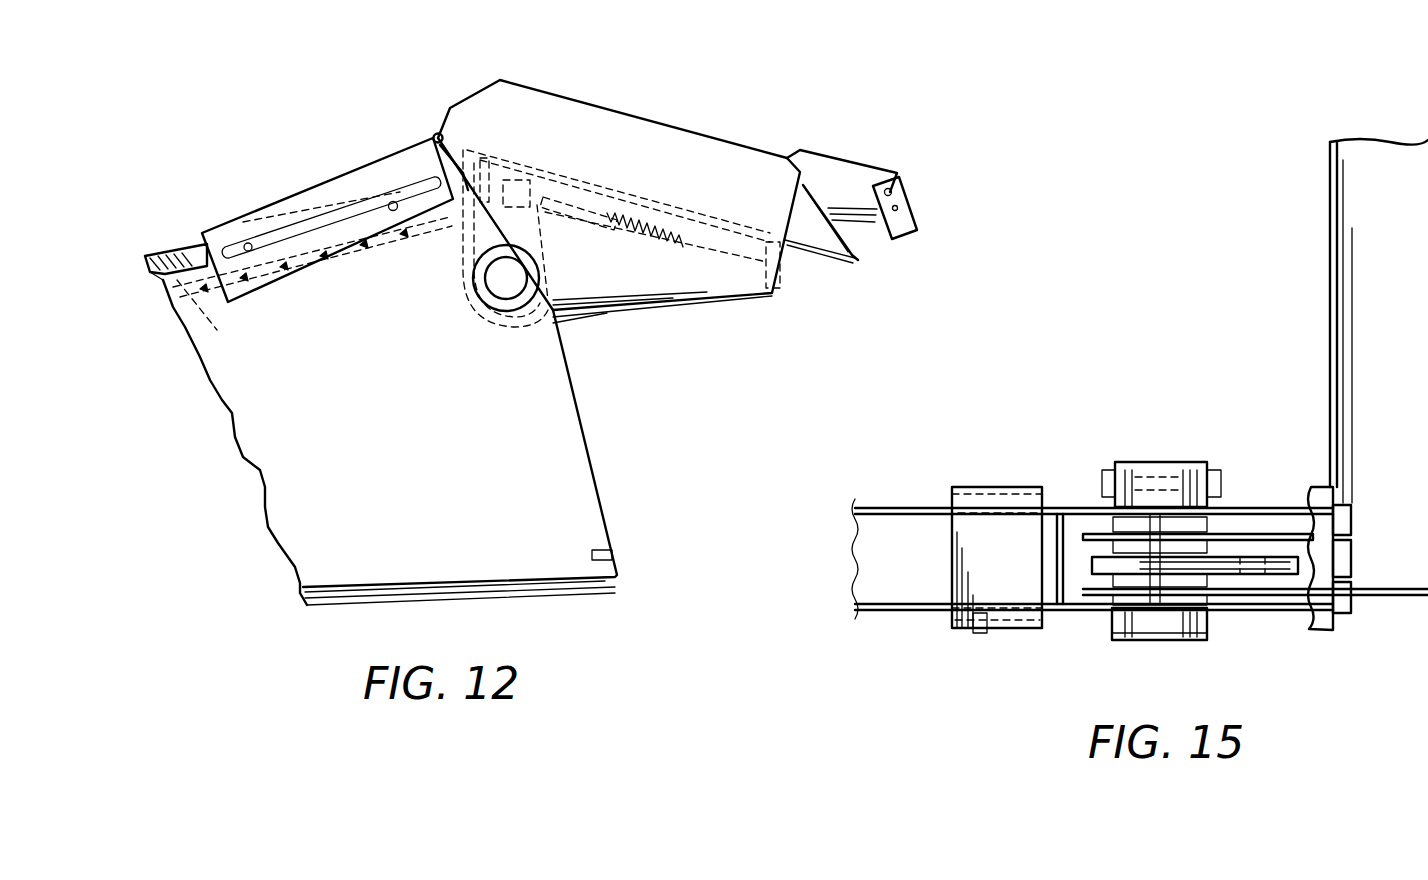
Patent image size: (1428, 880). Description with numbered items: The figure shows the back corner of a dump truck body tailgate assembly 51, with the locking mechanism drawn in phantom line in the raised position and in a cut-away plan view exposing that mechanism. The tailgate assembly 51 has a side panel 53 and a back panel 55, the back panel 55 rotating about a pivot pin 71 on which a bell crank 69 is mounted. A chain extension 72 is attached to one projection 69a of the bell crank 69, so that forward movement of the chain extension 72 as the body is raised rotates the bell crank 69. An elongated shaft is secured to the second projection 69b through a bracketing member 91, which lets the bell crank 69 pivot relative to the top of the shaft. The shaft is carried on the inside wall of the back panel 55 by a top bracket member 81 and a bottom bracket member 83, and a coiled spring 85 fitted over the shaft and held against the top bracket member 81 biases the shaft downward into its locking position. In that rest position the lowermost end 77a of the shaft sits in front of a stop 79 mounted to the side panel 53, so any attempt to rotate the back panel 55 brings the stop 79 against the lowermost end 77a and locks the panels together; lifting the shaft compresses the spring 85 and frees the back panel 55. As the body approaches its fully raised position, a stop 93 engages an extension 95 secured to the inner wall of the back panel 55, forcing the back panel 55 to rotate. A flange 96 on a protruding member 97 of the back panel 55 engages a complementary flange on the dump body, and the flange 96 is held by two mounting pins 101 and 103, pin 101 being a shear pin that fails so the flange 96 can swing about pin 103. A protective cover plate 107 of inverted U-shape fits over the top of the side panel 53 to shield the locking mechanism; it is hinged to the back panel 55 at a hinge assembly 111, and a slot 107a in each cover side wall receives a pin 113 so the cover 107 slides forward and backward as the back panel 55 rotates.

In FIG. 12, the tailgate assembly 51 is at (163, 242).
In FIG. 12, the side panel 53 is at (287, 487).
In FIG. 15, the side panel 53 is at (877, 508).
In FIG. 12, the back panel 55 is at (530, 88).
In FIG. 15, the back panel 55 is at (1331, 296).
In FIG. 12, the bell crank 69 is at (540, 325).
In FIG. 15, the bell crank 69 is at (1206, 555).
In FIG. 12, the bell crank projection 69a is at (438, 242).
In FIG. 12, the bell crank projection 69b is at (530, 185).
In FIG. 12, the pivot pin 71 is at (507, 290).
In FIG. 15, the pivot pin 71 is at (1165, 462).
In FIG. 12, the chain extension 72 is at (210, 319).
In FIG. 12, the lowermost end of shaft 77a is at (760, 267).
In FIG. 12, the stop 79 is at (618, 550).
In FIG. 12, the top bracket member 81 is at (607, 233).
In FIG. 12, the bottom bracket member 83 is at (762, 275).
In FIG. 12, the coiled spring 85 is at (637, 233).
In FIG. 12, the bracketing member 91 is at (553, 192).
In FIG. 15, the bracketing member 91 is at (1090, 537).
In FIG. 12, the stop 93 is at (490, 175).
In FIG. 12, the extension 95 is at (461, 245).
In FIG. 15, the extension 95 is at (1277, 583).
In FIG. 12, the flange 96 is at (905, 238).
In FIG. 12, the protruding member 97 is at (843, 165).
In FIG. 12, the mounting pin 101 is at (897, 208).
In FIG. 12, the mounting pin 103 is at (890, 190).
In FIG. 12, the protective cover plate 107 is at (300, 196).
In FIG. 15, the protective cover plate 107 is at (1010, 487).
In FIG. 12, the slot 107a is at (248, 243).
In FIG. 12, the hinge assembly 111 is at (437, 133).
In FIG. 12, the pin 113 is at (393, 201).